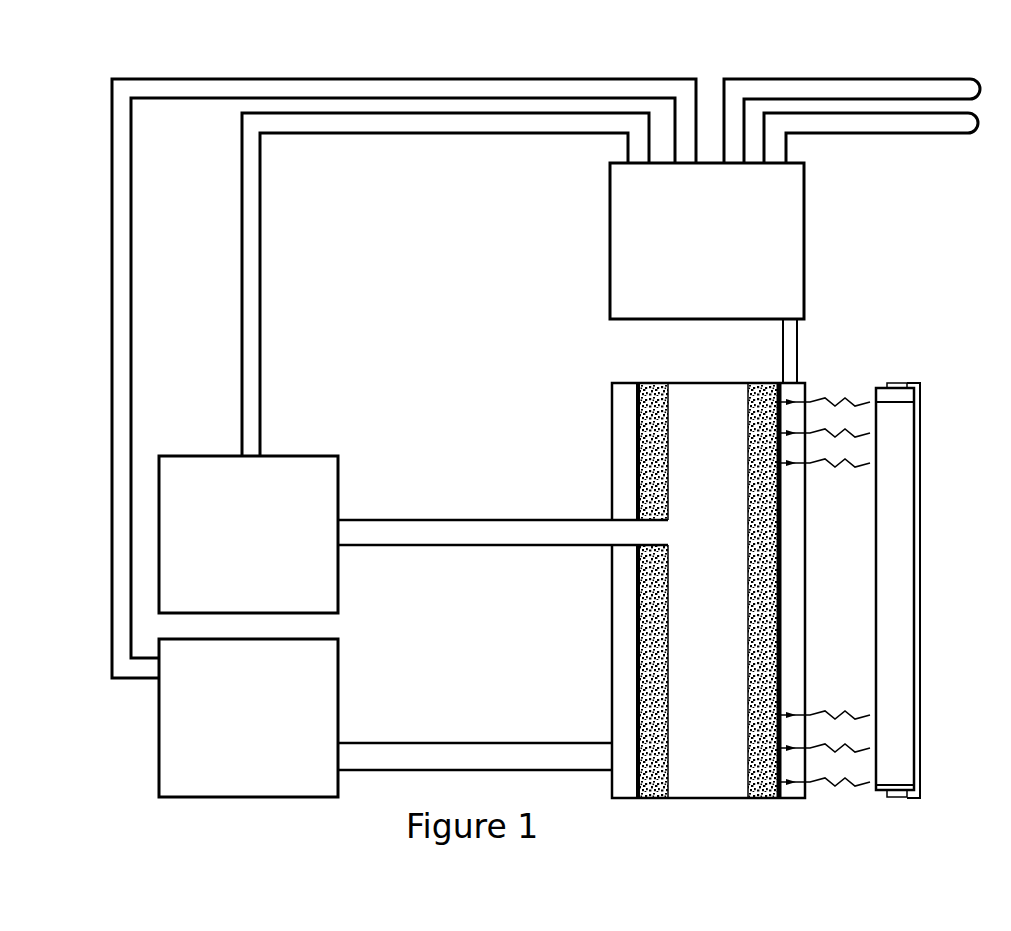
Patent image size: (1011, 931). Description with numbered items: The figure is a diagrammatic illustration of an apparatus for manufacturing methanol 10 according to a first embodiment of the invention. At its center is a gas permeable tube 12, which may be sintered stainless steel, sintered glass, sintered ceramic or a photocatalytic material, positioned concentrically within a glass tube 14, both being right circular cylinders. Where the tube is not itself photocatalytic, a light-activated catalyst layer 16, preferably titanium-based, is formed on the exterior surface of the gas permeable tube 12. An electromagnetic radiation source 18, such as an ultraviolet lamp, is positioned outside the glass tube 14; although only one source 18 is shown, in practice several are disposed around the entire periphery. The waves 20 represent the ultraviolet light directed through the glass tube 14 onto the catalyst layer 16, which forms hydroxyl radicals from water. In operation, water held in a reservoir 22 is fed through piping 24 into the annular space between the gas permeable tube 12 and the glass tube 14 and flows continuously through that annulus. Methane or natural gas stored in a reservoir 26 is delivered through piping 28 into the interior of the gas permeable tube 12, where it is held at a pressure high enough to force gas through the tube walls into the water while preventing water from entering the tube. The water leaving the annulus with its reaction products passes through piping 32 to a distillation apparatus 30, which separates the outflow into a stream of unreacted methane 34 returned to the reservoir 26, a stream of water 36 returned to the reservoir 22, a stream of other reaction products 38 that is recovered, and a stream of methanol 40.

The apparatus for manufacturing methanol 10 is at (390, 320).
The gas permeable tube 12 is at (748, 478).
The glass tube 14 is at (612, 428).
The light-activated catalyst layer 16 is at (638, 481).
The electromagnetic radiation source 18 is at (916, 555).
The waves 20 is at (825, 463).
The reservoir 22 is at (159, 723).
The piping 24 is at (473, 743).
The reservoir 26 is at (225, 456).
The piping 28 is at (470, 520).
The distillation apparatus 30 is at (804, 258).
The piping 32 is at (783, 343).
The stream of unreacted methane 34 is at (440, 133).
The stream of water 36 is at (400, 79).
The stream of other reaction products 38 is at (812, 79).
The stream of methanol 40 is at (845, 133).